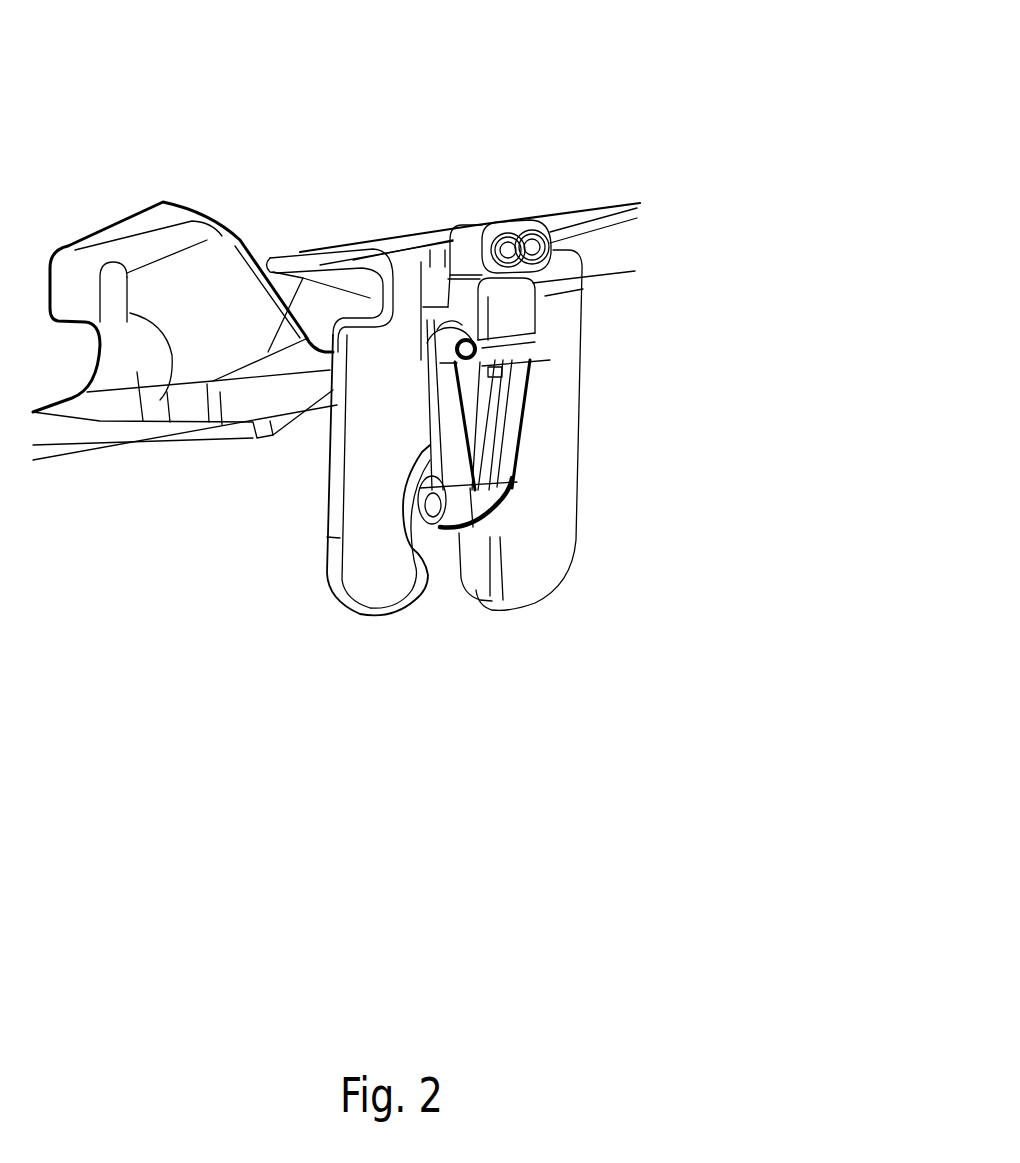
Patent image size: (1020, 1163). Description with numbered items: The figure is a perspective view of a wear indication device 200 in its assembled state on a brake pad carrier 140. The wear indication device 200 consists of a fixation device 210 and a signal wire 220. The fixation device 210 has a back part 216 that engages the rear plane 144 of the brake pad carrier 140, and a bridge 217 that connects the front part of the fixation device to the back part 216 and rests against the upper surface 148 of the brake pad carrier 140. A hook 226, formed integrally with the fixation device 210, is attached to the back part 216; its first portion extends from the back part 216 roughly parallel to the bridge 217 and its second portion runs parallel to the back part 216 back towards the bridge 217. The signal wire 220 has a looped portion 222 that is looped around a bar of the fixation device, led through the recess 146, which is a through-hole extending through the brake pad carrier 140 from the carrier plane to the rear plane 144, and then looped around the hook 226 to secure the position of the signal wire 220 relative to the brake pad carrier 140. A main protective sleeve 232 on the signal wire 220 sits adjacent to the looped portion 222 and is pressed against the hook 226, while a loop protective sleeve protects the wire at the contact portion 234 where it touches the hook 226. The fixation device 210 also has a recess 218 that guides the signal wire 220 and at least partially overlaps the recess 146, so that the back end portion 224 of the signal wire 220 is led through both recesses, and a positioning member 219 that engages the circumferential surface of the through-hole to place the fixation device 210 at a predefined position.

The brake pad carrier 140 is at (501, 568).
The rear plane 144 is at (592, 576).
The recess (through-hole) 146 is at (434, 556).
The upper surface 148 is at (585, 188).
The wear indication device 200 is at (517, 190).
The fixation device 210 is at (427, 190).
The back part 216 is at (547, 488).
The bridge 217 is at (291, 240).
The recess 218 is at (413, 573).
The positioning member 219 is at (465, 555).
The signal wire 220 is at (533, 232).
The looped portion 222 is at (507, 428).
The back end portion 224 is at (495, 548).
The hook 226 is at (520, 307).
The main protective sleeve 232 is at (441, 297).
The contact portion 234 is at (477, 349).